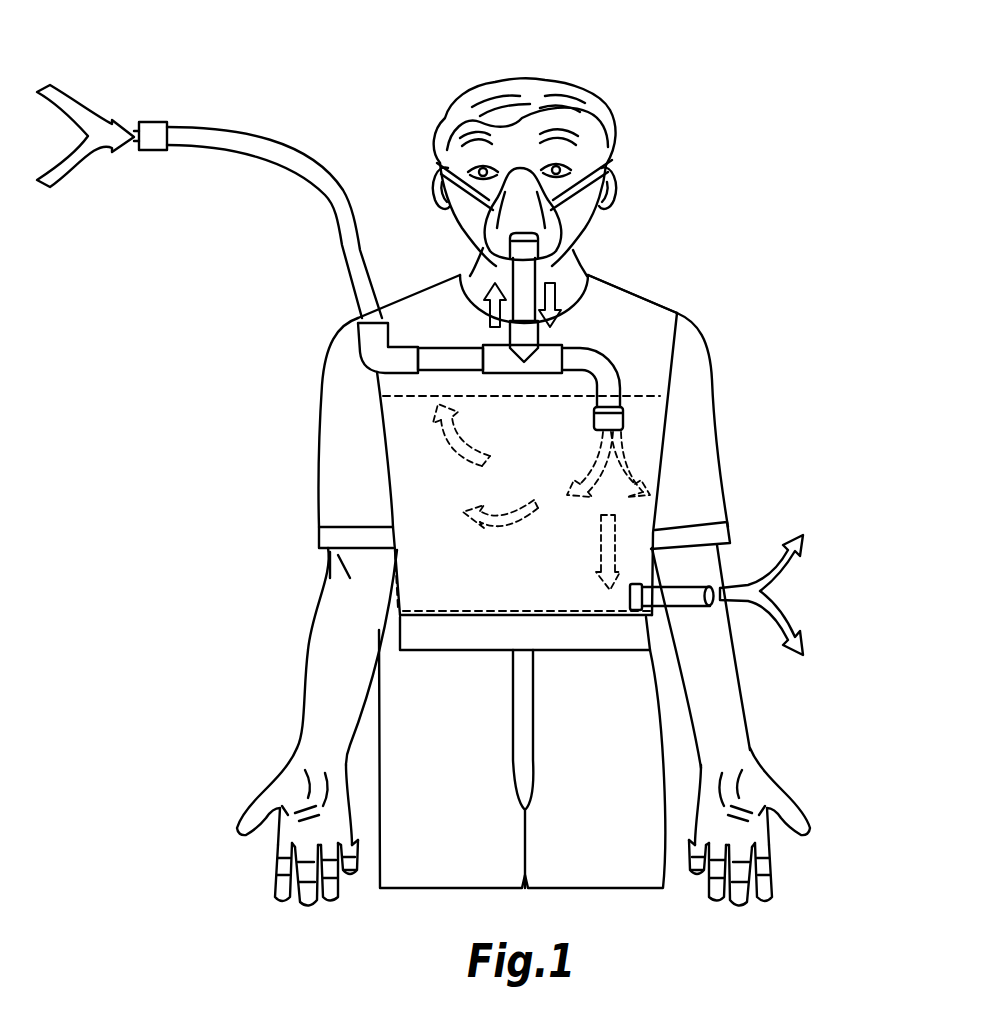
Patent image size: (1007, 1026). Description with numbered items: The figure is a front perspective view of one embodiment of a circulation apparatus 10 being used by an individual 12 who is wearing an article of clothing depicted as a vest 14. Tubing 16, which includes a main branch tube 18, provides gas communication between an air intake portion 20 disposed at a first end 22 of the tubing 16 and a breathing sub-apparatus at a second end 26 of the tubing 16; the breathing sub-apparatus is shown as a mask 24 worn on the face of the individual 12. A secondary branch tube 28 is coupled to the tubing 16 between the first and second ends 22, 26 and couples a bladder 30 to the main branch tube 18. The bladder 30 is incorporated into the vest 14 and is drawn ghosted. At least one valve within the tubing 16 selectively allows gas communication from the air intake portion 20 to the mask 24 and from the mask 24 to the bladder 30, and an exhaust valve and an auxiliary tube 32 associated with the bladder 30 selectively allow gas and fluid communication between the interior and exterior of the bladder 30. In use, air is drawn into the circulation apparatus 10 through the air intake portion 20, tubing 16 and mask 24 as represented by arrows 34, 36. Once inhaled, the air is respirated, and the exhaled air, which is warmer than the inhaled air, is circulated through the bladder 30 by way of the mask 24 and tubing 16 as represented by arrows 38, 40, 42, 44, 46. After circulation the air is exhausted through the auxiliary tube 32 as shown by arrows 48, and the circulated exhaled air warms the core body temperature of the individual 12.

The circulation apparatus 10 is at (678, 132).
The individual 12 is at (713, 395).
The vest 14 is at (640, 297).
The tubing 16 is at (287, 132).
The main branch tube 18 is at (358, 307).
The air intake portion 20 is at (155, 123).
The first end 22 is at (133, 142).
The mask 24 is at (578, 227).
The second end 26 is at (492, 236).
The secondary branch tube 28 is at (603, 361).
The bladder 30 is at (423, 398).
The auxiliary tube 32 is at (690, 610).
The arrow 34 is at (78, 114).
The arrow 36 is at (477, 322).
The arrow 38 is at (570, 322).
The arrow 40 is at (593, 468).
The arrow 42 is at (460, 433).
The arrow 44 is at (500, 527).
The arrow 46 is at (603, 535).
The arrows 48 is at (797, 563).